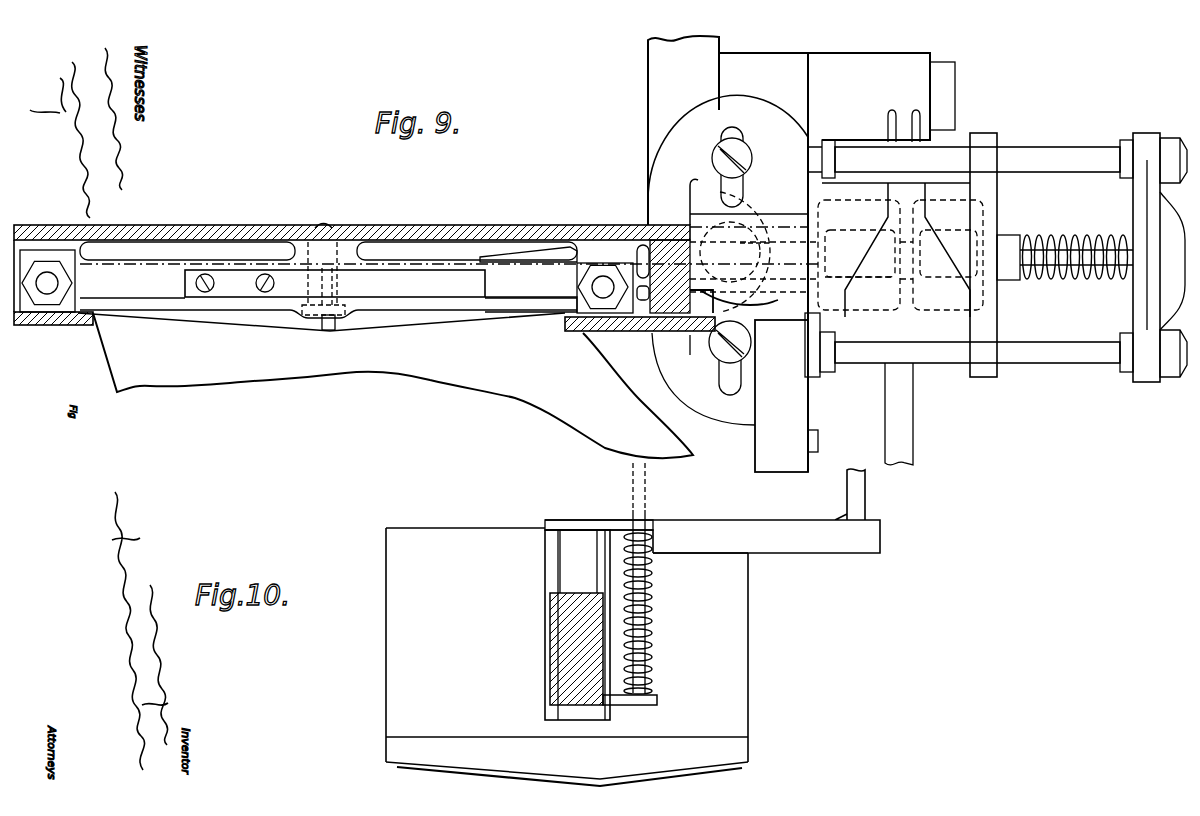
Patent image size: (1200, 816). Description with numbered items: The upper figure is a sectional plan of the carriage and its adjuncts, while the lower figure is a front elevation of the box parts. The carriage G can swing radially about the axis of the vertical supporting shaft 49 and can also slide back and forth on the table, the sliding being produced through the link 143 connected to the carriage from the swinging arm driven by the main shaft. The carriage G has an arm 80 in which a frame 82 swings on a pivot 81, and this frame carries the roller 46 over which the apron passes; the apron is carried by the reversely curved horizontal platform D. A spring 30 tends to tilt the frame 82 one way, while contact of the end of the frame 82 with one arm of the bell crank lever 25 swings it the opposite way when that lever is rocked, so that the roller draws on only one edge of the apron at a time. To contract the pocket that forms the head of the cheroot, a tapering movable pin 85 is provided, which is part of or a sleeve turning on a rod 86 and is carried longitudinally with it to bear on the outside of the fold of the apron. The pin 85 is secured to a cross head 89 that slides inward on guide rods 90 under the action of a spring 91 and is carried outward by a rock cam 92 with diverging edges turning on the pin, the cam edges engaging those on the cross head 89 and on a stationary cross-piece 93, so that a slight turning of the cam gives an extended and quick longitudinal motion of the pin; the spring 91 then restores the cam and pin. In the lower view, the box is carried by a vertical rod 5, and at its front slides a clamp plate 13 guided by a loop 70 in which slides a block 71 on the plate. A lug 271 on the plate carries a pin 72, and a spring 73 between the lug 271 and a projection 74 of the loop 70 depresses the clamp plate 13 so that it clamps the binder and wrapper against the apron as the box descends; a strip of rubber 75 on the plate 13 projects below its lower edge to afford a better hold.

In FIG. 9, the carriage G is at (517, 254).
In FIG. 9, the bell crank lever 25 is at (712, 286).
In FIG. 9, the spring 30 is at (335, 283).
In FIG. 9, the roller 46 is at (321, 332).
In FIG. 9, the vertical supporting shaft 49 is at (746, 279).
In FIG. 9, the arm 80 is at (458, 230).
In FIG. 9, the pivot 81 is at (325, 228).
In FIG. 9, the frame 82 is at (543, 297).
In FIG. 9, the movable pin 85 is at (537, 250).
In FIG. 9, the rod 86 is at (762, 242).
In FIG. 9, the cross head 89 is at (966, 190).
In FIG. 9, the guide rods 90 is at (1065, 153).
In FIG. 9, the spring 91 is at (1080, 238).
In FIG. 9, the rock cam 92 is at (860, 292).
In FIG. 9, the stationary cross-piece 93 is at (859, 250).
In FIG. 9, the link 143 is at (905, 432).
In FIG. 9, the platform D is at (429, 383).
In FIG. 10, the vertical rod 5 is at (868, 490).
In FIG. 10, the clamp plate 13 is at (567, 653).
In FIG. 10, the loop 70 is at (545, 564).
In FIG. 10, the block 71 is at (556, 650).
In FIG. 10, the pin 72 is at (648, 518).
In FIG. 10, the spring 73 is at (655, 630).
In FIG. 10, the projection 74 is at (595, 521).
In FIG. 10, the strip of rubber 75 is at (745, 768).
In FIG. 10, the lug 271 is at (660, 700).